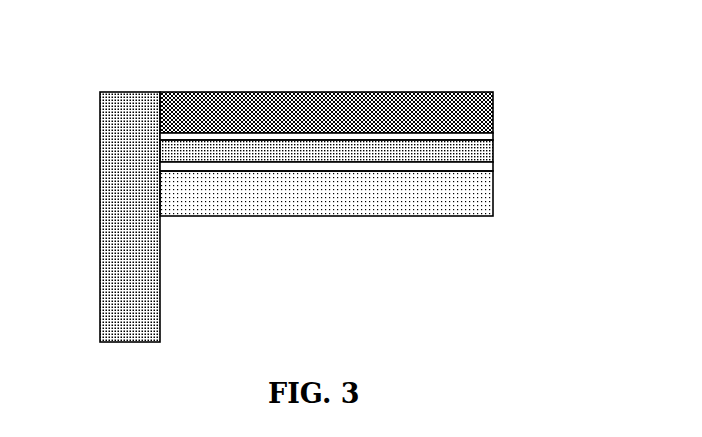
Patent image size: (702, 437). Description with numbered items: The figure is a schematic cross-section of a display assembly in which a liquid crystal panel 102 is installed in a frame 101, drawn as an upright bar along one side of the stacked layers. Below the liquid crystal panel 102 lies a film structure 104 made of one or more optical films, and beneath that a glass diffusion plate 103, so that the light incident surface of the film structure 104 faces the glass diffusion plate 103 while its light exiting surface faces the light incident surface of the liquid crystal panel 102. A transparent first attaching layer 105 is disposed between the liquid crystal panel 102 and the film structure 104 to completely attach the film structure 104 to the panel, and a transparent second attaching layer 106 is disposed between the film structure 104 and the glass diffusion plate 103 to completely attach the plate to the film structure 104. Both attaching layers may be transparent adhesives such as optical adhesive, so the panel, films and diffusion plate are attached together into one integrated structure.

The frame 101 is at (100, 215).
The liquid crystal panel 102 is at (325, 92).
The glass diffusion plate 103 is at (327, 216).
The film structure 104 is at (493, 152).
The first attaching layer 105 is at (493, 134).
The second attaching layer 106 is at (493, 170).